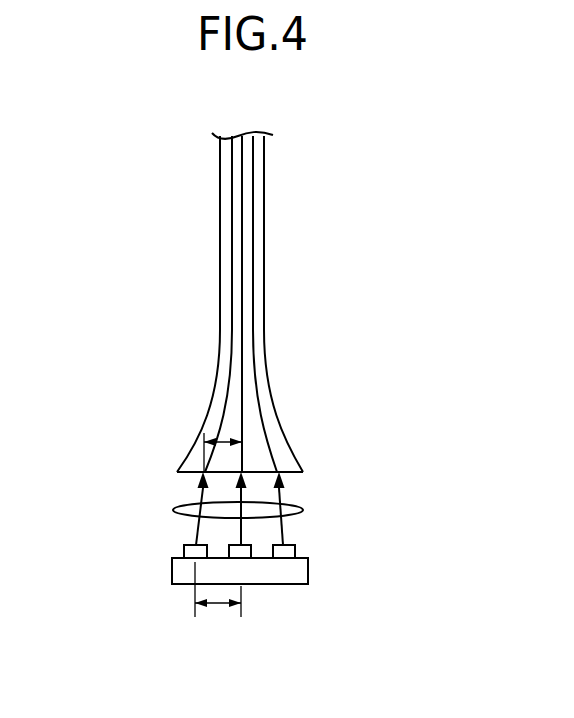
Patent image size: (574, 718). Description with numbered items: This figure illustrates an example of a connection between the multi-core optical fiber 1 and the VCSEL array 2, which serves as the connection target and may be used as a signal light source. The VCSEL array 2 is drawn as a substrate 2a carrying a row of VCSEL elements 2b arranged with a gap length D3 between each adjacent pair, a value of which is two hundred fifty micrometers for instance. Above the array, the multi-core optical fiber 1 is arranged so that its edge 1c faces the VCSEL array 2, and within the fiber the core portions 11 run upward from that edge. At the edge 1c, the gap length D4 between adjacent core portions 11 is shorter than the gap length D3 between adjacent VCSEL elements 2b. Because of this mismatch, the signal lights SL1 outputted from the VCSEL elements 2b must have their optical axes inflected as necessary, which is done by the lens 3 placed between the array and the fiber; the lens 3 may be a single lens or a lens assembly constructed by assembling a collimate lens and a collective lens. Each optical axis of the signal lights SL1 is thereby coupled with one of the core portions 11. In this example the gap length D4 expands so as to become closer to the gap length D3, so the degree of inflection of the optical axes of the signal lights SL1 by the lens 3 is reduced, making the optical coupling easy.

The multi-core optical fiber 1 is at (338, 200).
The core portion 11 is at (255, 312).
The edge 1c is at (301, 479).
The gap length D4 is at (222, 437).
The signal light SL1 is at (197, 493).
The lens 3 is at (307, 510).
The VCSEL array 2 is at (336, 574).
The VCSEL element 2b is at (184, 550).
The substrate 2a is at (172, 575).
The gap length D3 is at (221, 607).